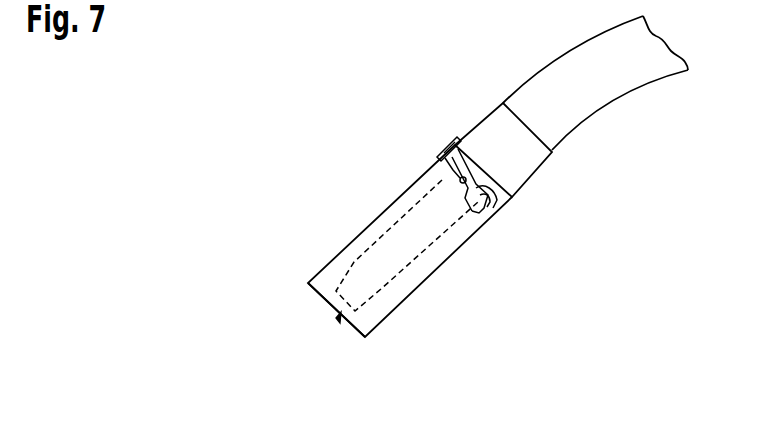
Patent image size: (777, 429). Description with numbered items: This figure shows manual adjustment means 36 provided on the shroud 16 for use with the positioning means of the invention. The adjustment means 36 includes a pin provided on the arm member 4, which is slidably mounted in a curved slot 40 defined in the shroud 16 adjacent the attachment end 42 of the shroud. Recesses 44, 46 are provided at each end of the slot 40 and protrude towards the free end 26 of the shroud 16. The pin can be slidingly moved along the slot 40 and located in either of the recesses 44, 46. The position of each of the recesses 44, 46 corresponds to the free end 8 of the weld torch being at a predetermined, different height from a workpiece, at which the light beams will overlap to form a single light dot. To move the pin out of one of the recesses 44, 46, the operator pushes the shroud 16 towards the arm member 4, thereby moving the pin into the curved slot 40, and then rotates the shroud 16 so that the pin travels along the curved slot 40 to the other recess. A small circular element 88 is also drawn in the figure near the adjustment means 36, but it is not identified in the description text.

The arm member 4 is at (572, 63).
The free end of the weld torch 8 is at (337, 318).
The shroud 16 is at (382, 221).
The free end of the shroud 26 is at (355, 333).
The manual adjustment means 36 is at (447, 141).
The curved slot 40 is at (500, 202).
The attachment end 42 is at (513, 195).
The recess 44 is at (438, 156).
The recess 46 is at (480, 216).
The pivot pin 88 is at (448, 174).